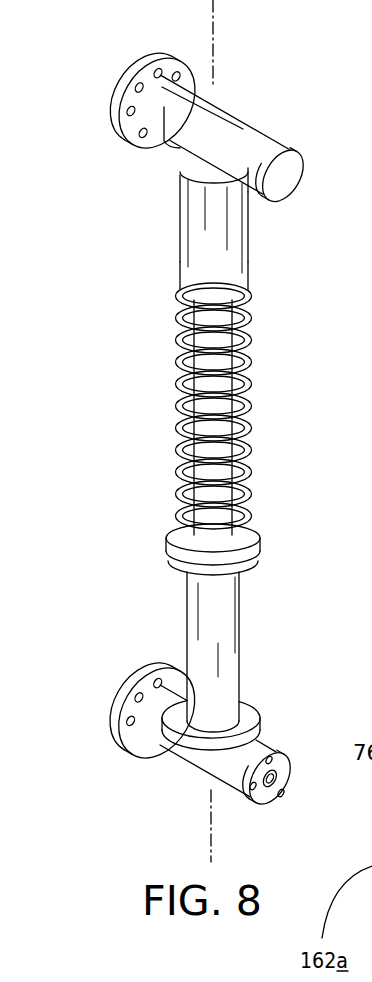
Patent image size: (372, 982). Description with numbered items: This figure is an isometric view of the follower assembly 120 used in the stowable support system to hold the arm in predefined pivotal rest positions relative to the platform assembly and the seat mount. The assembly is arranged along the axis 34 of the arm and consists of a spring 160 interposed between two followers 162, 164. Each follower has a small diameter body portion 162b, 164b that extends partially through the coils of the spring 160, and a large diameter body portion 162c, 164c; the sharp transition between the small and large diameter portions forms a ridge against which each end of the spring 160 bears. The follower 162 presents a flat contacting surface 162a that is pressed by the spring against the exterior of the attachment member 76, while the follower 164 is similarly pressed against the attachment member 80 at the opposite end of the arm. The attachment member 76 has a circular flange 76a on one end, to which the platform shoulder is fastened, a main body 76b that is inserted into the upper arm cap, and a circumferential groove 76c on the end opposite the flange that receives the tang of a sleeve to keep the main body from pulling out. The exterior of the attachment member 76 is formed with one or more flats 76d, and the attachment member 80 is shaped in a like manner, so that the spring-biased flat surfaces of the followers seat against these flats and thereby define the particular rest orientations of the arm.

The axis 34 is at (214, 29).
The attachment member 76 is at (235, 108).
The circular flange 76a is at (140, 70).
The main body 76b is at (178, 163).
The circumferential groove 76c is at (265, 146).
The flat 76d is at (247, 190).
The follower assembly 120 is at (124, 257).
The spring 160 is at (250, 445).
The follower 162 is at (250, 255).
The flat contacting surface 162a is at (190, 163).
The small diameter body portion 162b is at (223, 343).
The large diameter body portion 162c is at (200, 283).
The follower 164 is at (240, 648).
The small diameter body portion 164b is at (256, 520).
The large diameter body portion 164c is at (222, 692).
The attachment member 80 is at (182, 762).